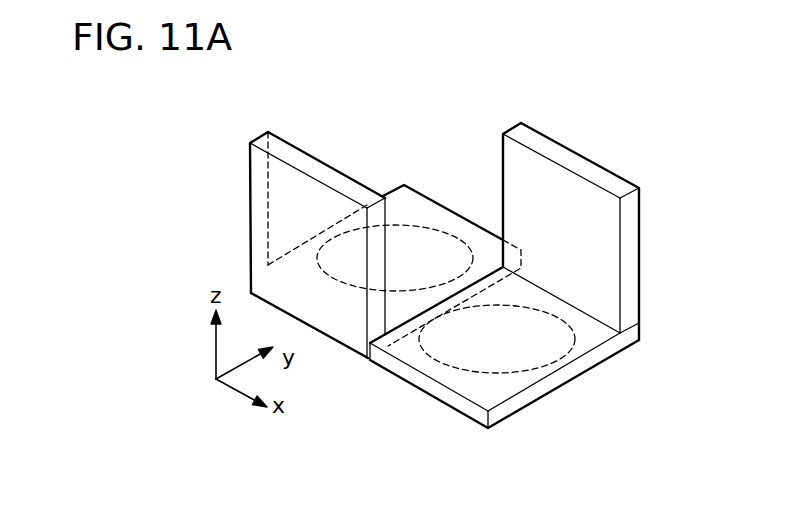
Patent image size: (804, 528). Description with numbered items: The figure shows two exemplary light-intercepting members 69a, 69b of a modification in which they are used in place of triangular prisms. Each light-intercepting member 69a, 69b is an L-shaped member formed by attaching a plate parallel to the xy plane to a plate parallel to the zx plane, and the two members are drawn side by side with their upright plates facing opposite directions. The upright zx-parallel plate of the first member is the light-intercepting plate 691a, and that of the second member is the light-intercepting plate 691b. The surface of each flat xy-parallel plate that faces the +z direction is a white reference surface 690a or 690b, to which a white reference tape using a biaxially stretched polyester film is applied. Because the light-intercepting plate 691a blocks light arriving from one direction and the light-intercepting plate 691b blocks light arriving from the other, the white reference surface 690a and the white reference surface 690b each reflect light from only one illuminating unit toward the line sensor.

The light-intercepting member 69a is at (336, 233).
The light-intercepting member 69b is at (546, 266).
The white reference surface 690a is at (428, 243).
The white reference surface 690b is at (535, 350).
The light-intercepting plate 691a is at (302, 182).
The light-intercepting plate 691b is at (565, 182).